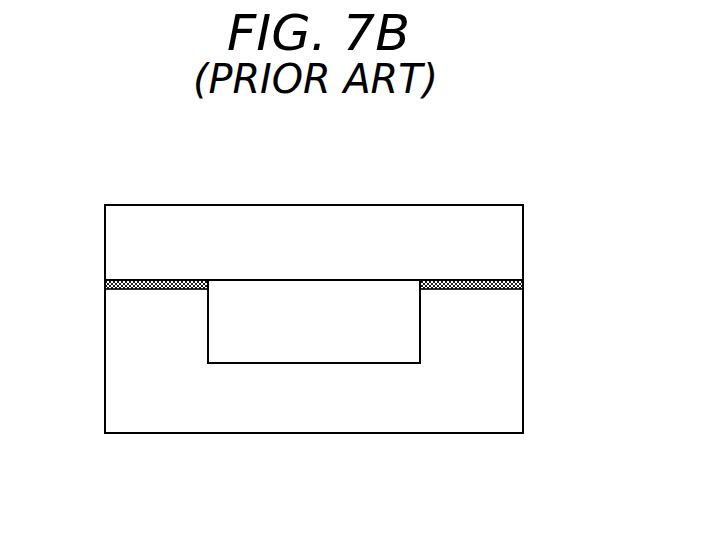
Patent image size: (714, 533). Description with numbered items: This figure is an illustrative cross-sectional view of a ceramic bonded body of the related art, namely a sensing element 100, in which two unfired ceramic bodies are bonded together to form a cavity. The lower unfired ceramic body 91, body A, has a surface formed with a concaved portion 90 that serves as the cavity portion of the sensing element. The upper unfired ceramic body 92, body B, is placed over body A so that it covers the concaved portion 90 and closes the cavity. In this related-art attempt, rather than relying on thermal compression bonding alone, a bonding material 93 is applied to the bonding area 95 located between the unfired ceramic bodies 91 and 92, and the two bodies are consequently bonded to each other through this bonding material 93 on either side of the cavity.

The sensing element 100 is at (528, 190).
The concaved portion 90 is at (320, 333).
The unfired ceramic body 91 is at (493, 398).
The unfired ceramic body 92 is at (462, 228).
The bonding material 93 is at (486, 289).
The bonding area 95 is at (170, 290).